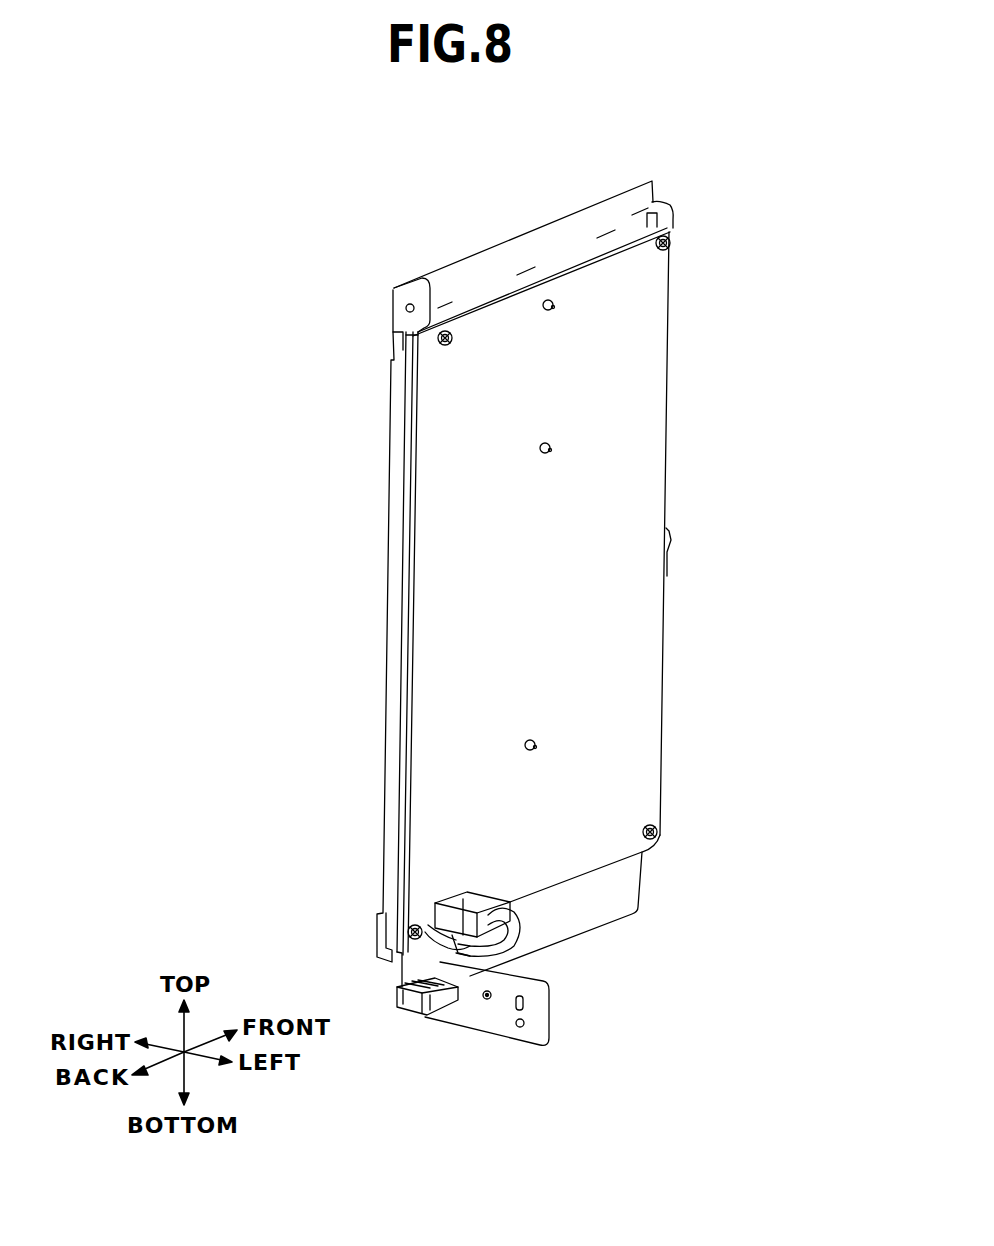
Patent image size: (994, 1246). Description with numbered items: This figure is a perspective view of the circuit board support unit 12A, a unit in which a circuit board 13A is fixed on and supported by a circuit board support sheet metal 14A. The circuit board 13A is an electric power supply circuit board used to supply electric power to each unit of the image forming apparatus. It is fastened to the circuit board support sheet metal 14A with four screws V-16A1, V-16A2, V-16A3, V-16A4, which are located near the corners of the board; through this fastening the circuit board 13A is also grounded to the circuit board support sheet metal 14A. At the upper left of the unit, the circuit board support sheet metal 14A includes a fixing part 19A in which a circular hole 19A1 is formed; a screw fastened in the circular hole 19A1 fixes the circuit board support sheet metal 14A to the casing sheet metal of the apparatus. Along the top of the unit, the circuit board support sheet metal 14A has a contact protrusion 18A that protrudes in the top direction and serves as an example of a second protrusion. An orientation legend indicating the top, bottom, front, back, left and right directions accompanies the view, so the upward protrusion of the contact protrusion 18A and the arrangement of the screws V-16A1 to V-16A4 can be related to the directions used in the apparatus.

The circuit board support unit 12A is at (338, 236).
The circuit board 13A is at (445, 641).
The contact protrusion 18A is at (600, 198).
The circuit board support sheet metal 14A is at (663, 207).
The fixing part 19A is at (397, 322).
The circular hole 19A1 is at (393, 310).
The screw V-16A1 is at (442, 350).
The screw V-16A2 is at (670, 242).
The screw V-16A3 is at (410, 927).
The screw V-16A4 is at (660, 831).